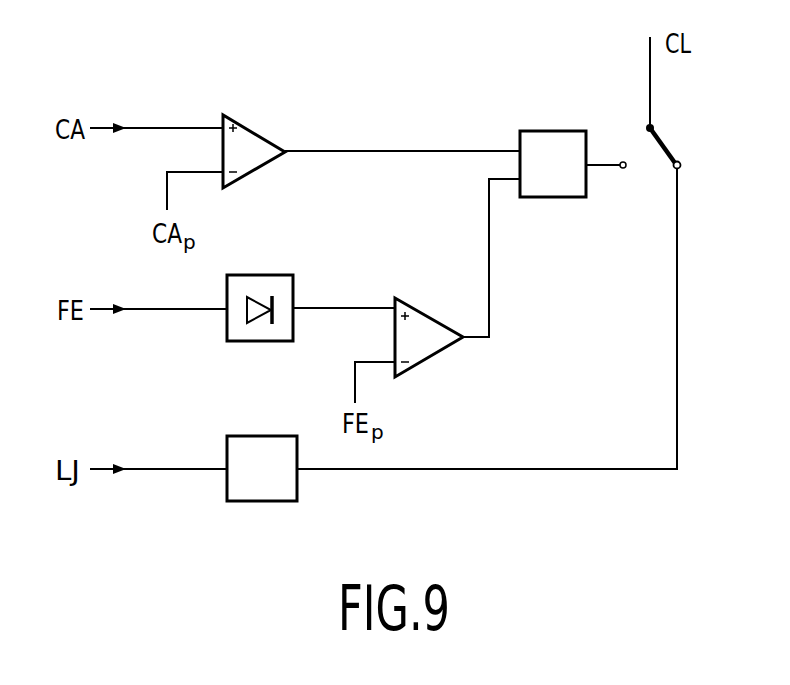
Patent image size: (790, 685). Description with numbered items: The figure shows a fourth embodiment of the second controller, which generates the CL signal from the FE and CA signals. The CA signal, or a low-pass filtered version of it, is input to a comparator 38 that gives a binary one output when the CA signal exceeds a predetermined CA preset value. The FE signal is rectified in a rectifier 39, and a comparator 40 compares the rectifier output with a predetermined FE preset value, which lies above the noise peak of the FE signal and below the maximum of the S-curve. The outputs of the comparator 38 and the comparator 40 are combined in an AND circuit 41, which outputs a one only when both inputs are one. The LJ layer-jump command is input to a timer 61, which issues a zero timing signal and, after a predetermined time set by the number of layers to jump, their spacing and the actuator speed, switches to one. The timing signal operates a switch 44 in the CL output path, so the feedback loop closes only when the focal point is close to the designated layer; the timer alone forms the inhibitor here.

The comparator 38 is at (259, 128).
The rectifier 39 is at (252, 275).
The comparator 40 is at (441, 318).
The AND circuit 41 is at (551, 130).
The switch 44 is at (668, 140).
The timer 61 is at (253, 436).